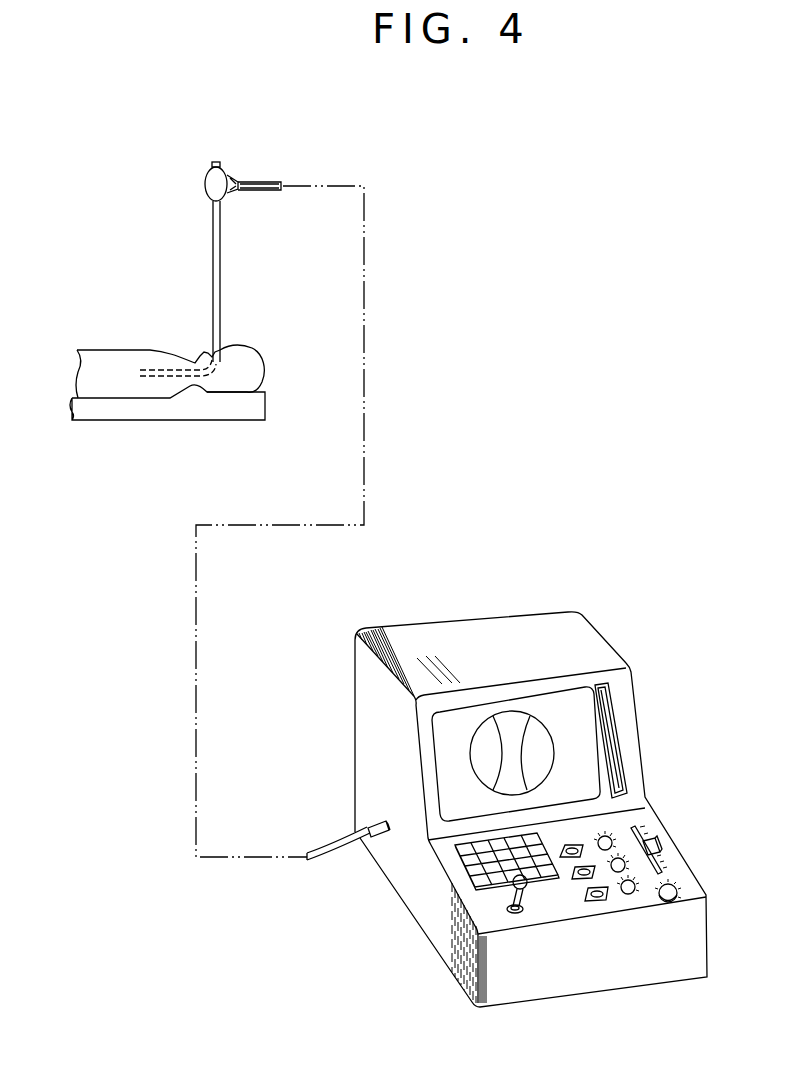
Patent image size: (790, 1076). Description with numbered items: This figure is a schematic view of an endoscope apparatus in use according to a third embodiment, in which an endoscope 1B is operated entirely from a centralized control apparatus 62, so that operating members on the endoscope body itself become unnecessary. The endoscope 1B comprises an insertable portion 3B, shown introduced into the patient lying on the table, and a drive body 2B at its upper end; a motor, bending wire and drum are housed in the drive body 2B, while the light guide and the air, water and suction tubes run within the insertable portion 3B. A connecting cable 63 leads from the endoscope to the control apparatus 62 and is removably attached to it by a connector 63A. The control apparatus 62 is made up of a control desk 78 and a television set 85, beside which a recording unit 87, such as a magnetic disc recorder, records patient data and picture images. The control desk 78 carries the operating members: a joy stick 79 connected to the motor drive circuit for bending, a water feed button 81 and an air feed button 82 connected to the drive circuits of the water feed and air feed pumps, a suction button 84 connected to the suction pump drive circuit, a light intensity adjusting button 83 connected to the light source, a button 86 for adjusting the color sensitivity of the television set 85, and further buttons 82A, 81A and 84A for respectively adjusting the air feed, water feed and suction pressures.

The endoscope 1B is at (224, 284).
The drive body 2B is at (212, 185).
The insertable portion 3B is at (173, 375).
The control apparatus 62 is at (363, 773).
The connecting cable 63 is at (327, 854).
The connector 63A is at (374, 823).
The control desk 78 is at (482, 907).
The joy stick 79 is at (520, 903).
The water feed button 81 is at (578, 878).
The water feed pressure adjusting button 81A is at (625, 869).
The air feed button 82 is at (605, 899).
The air feed pressure adjusting button 82A is at (631, 894).
The light intensity adjusting button 83 is at (660, 847).
The suction button 84 is at (583, 849).
The suction pressure adjusting button 84A is at (611, 837).
The television set 85 is at (550, 750).
The color sensitivity adjusting button 86 is at (678, 893).
The recording unit 87 is at (605, 710).